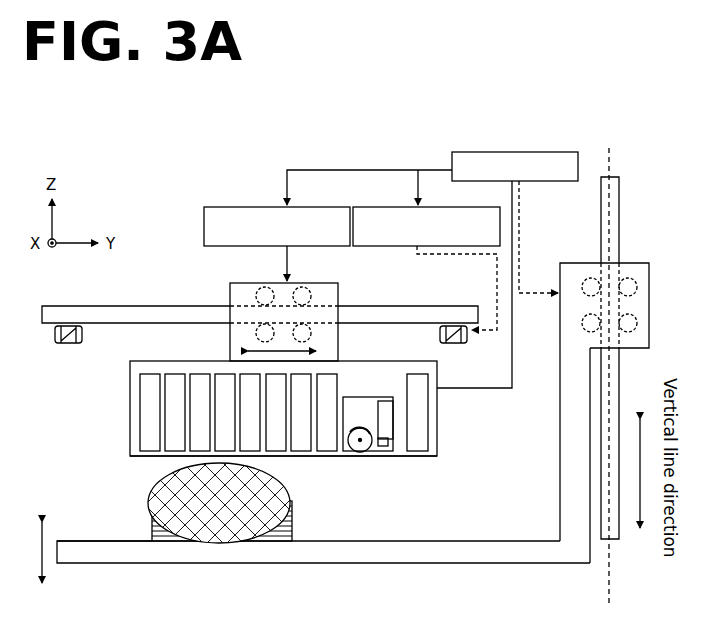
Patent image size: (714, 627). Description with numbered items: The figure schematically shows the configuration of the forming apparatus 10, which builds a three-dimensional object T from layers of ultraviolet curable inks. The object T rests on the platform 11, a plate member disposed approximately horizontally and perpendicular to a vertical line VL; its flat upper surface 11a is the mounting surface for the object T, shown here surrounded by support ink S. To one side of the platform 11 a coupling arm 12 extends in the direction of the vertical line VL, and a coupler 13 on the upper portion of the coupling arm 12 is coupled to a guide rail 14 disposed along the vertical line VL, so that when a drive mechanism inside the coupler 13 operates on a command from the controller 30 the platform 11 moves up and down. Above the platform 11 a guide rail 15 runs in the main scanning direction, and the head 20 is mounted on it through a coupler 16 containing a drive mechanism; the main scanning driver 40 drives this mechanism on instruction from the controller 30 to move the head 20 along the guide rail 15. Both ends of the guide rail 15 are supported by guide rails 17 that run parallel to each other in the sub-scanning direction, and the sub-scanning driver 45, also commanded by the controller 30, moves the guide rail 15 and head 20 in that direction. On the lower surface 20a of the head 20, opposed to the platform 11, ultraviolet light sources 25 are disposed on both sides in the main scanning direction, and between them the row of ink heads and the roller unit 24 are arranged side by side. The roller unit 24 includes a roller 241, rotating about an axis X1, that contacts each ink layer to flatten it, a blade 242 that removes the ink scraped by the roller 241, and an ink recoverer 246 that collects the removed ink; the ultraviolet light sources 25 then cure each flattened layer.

The forming apparatus 10 is at (197, 236).
The platform 11 is at (95, 563).
The upper surface 11a is at (100, 541).
The coupling arm 12 is at (560, 467).
The coupler 13 is at (643, 265).
The guide rail 14 is at (620, 201).
The guide rail 15 is at (54, 306).
The coupler 16 is at (242, 290).
The guide rails 17 is at (67, 344).
The head 20 is at (128, 408).
The lower surface 20a is at (130, 466).
The roller unit 24 is at (352, 396).
The ultraviolet light sources 25 is at (416, 374).
The roller 241 is at (363, 456).
The blade 242 is at (375, 408).
The ink recoverer 246 is at (385, 450).
The controller 30 is at (465, 152).
The main scanning driver 40 is at (243, 207).
The sub-scanning driver 45 is at (371, 207).
The support ink S is at (292, 521).
The three-dimensional object T is at (220, 543).
The roller rotation axis X1 is at (355, 452).
The vertical line VL is at (611, 366).